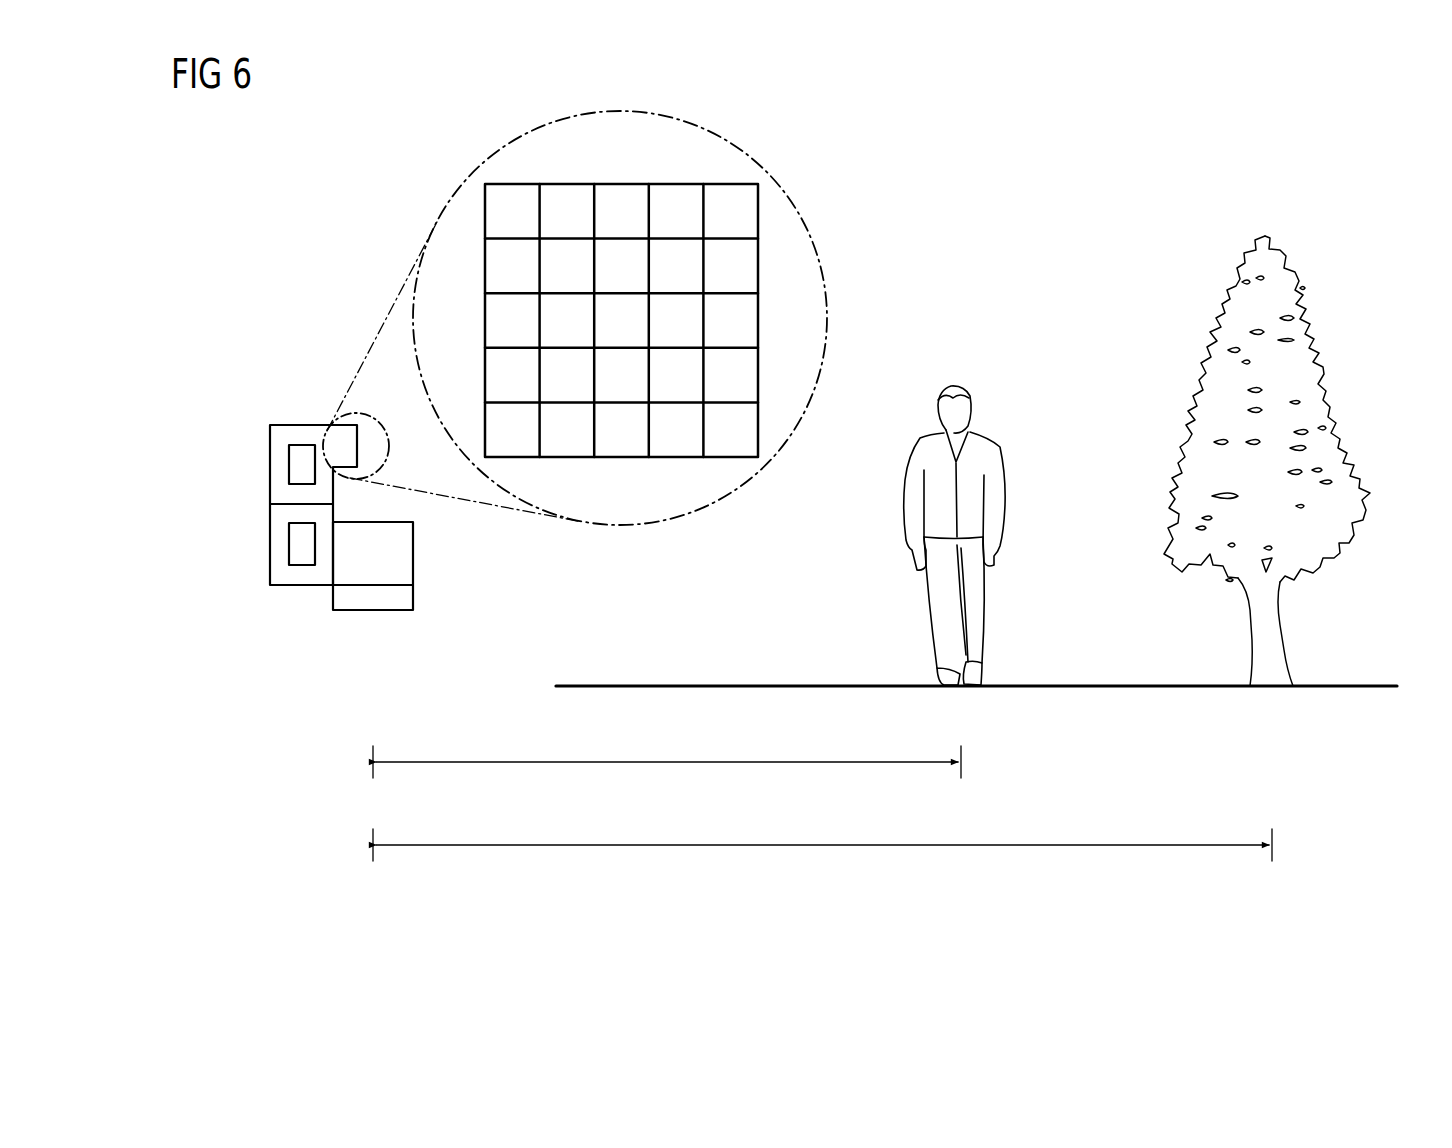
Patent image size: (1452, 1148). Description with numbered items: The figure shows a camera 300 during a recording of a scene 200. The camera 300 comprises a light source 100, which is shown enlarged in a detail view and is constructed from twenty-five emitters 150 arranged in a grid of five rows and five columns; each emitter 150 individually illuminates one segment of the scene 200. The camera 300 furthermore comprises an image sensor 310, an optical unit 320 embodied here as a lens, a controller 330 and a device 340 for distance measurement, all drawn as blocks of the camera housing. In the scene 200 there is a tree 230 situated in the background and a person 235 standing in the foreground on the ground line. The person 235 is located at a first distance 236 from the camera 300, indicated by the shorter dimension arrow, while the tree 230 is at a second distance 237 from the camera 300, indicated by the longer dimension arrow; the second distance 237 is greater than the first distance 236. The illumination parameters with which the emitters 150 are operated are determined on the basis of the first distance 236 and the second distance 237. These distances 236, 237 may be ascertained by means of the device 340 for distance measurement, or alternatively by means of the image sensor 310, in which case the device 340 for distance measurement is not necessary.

The light source 100 is at (329, 366).
The emitter 150 is at (532, 228).
The scene 200 is at (919, 876).
The tree 230 is at (1165, 466).
The person 235 is at (903, 513).
The first distance 236 is at (665, 762).
The second distance 237 is at (822, 845).
The camera 300 is at (294, 416).
The image sensor 310 is at (289, 542).
The optical unit 320 is at (413, 553).
The controller 330 is at (289, 462).
The device for distance measurement 340 is at (413, 597).